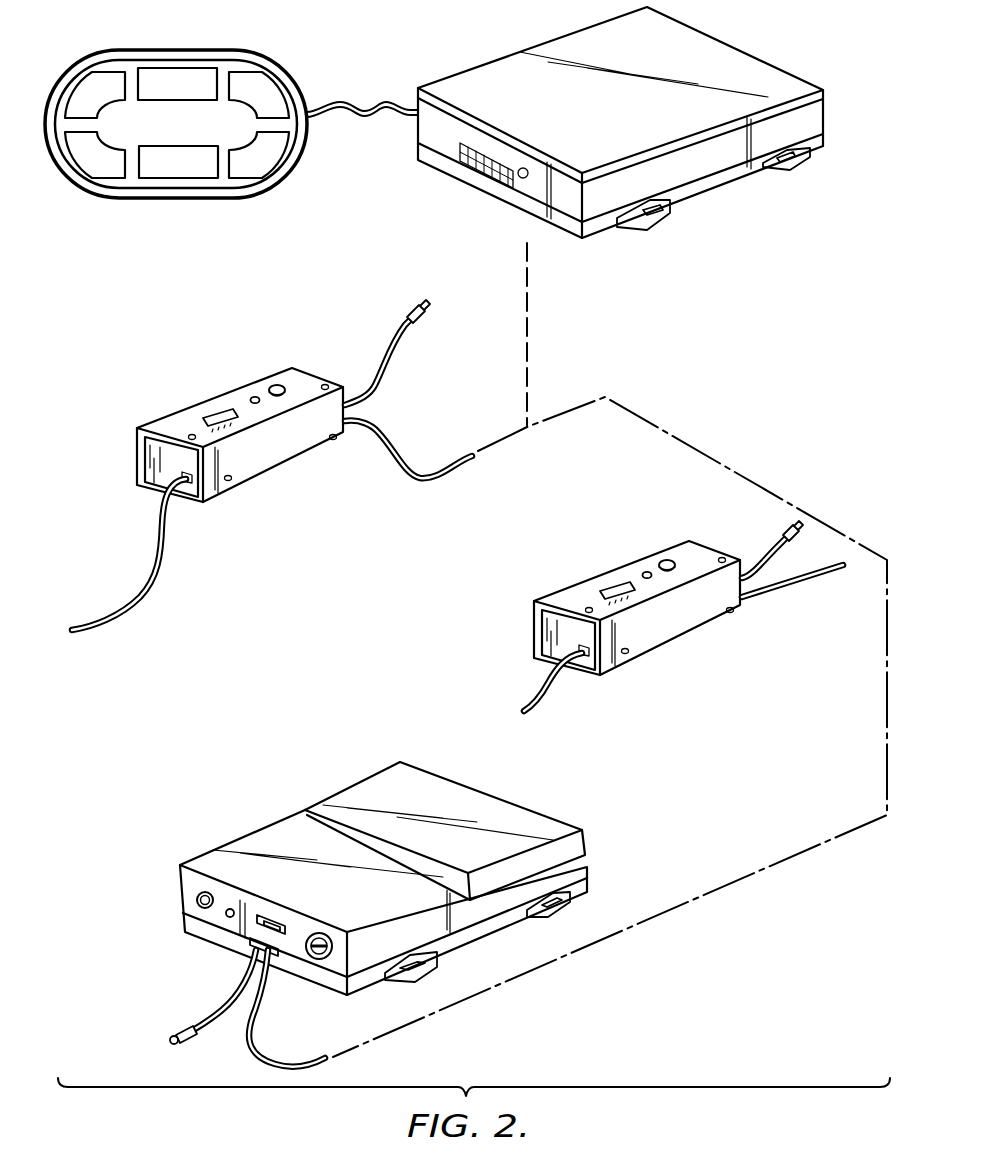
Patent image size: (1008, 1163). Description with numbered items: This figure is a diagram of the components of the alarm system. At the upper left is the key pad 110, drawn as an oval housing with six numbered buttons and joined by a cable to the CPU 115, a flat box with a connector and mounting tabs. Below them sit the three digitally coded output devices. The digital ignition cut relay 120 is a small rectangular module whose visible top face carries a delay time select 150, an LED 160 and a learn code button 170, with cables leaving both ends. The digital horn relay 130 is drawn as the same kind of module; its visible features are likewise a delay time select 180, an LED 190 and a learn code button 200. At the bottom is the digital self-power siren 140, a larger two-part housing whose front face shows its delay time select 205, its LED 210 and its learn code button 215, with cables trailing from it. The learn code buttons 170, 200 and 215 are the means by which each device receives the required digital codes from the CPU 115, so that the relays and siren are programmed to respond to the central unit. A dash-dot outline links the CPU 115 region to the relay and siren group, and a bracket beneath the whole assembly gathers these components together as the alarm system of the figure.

The key pad 110 is at (228, 49).
The CPU 115 is at (758, 76).
The digital ignition cut relay 120 is at (272, 465).
The digital horn relay 130 is at (683, 608).
The digital self-power siren 140 is at (358, 914).
The delay time select 150 is at (213, 416).
The LED 160 is at (253, 397).
The learn code button 170 is at (281, 386).
The delay time select 180 is at (606, 591).
The LED 190 is at (645, 573).
The learn code button 200 is at (666, 561).
The delay time select 205 is at (264, 915).
The LED 210 is at (228, 917).
The learn code button 215 is at (196, 901).